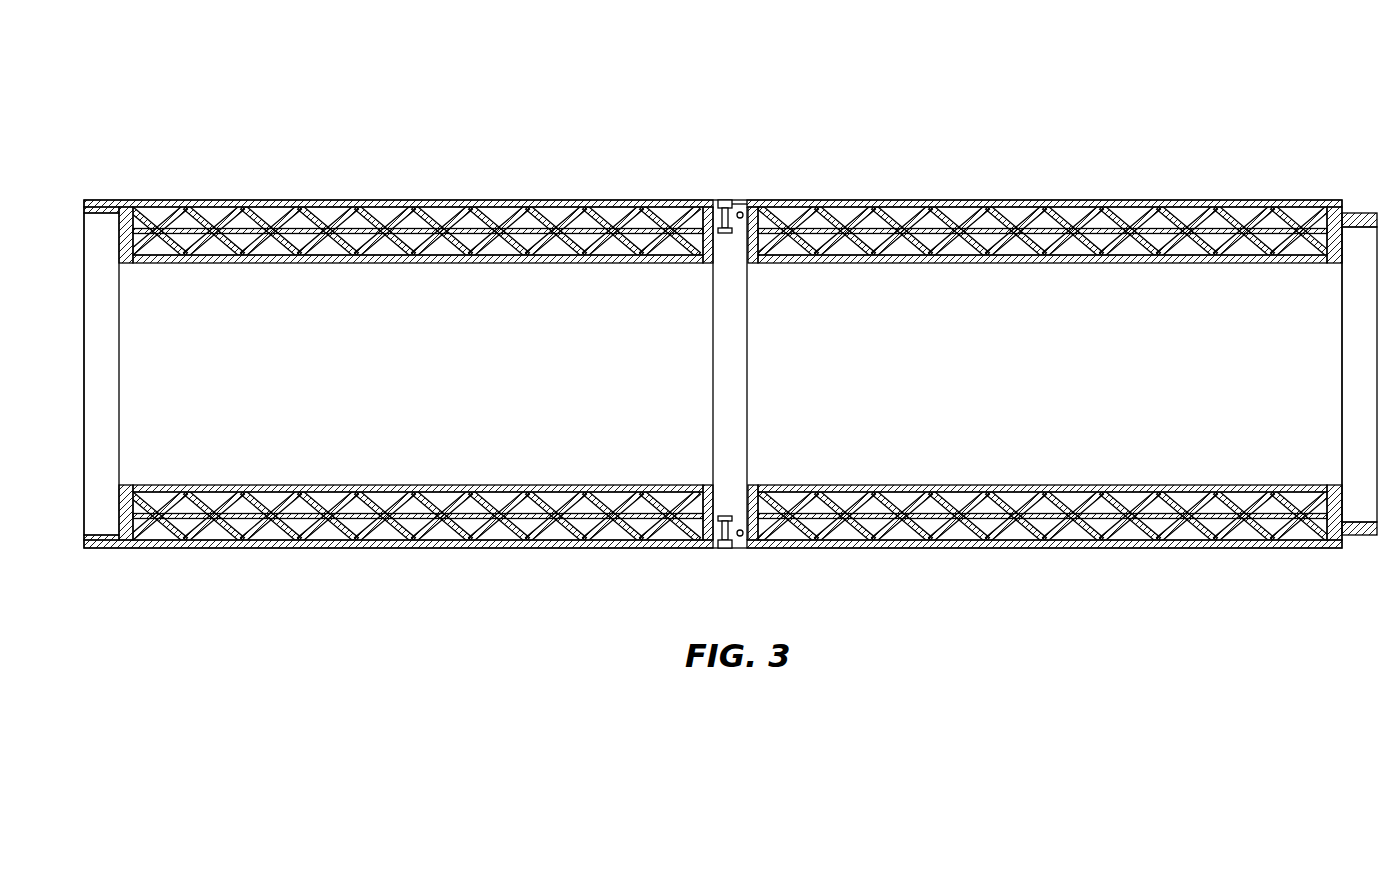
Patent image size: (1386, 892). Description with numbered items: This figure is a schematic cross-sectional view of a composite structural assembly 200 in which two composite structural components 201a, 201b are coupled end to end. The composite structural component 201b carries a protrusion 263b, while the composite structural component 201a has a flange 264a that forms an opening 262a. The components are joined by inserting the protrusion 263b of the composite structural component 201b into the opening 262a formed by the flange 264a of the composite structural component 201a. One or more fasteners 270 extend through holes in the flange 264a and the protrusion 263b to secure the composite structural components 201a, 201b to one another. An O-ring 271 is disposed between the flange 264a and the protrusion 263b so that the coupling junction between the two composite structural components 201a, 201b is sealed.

The composite structural assembly 200 is at (625, 95).
The composite structural component 201a is at (1020, 185).
The composite structural component 201b is at (358, 185).
The opening 262a is at (728, 348).
The protrusion 263b is at (738, 224).
The flange 264a is at (738, 205).
The fastener 270 is at (723, 200).
The O-ring 271 is at (757, 203).